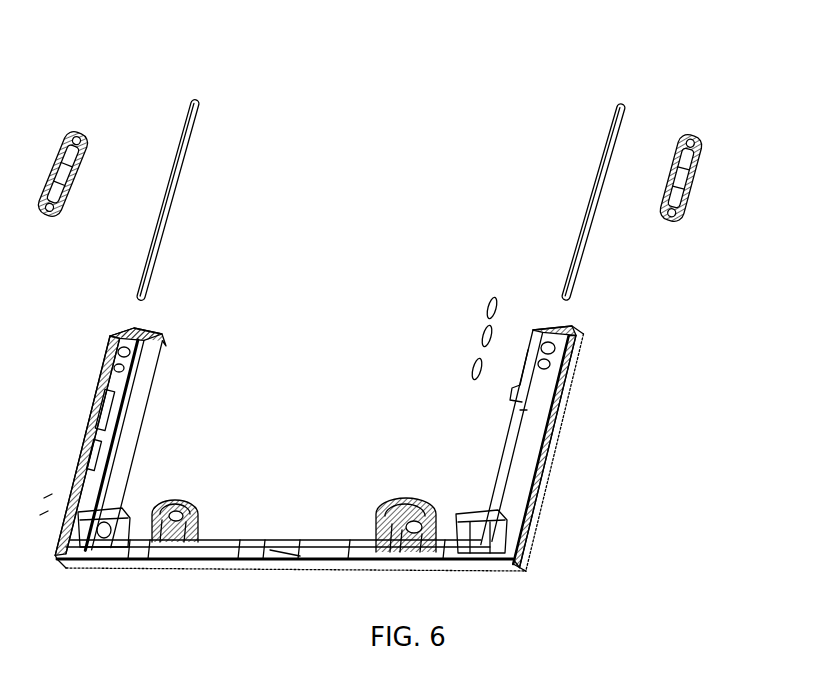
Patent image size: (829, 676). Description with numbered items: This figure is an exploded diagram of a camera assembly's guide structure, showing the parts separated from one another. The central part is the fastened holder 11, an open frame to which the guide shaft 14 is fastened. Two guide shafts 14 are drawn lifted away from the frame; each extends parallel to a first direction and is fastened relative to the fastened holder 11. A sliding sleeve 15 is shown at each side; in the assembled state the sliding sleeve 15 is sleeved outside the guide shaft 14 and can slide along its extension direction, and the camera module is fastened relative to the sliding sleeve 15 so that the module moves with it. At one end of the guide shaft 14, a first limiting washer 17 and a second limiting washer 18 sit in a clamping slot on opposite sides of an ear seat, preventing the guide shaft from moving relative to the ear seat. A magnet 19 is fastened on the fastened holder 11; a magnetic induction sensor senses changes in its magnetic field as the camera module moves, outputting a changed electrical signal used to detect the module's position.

The fastened holder 11 is at (366, 448).
The guide shaft 14 is at (566, 249).
The sliding sleeve 15 is at (72, 134).
The first limiting washer 17 is at (543, 540).
The second limiting washer 18 is at (548, 517).
The magnet 19 is at (476, 326).